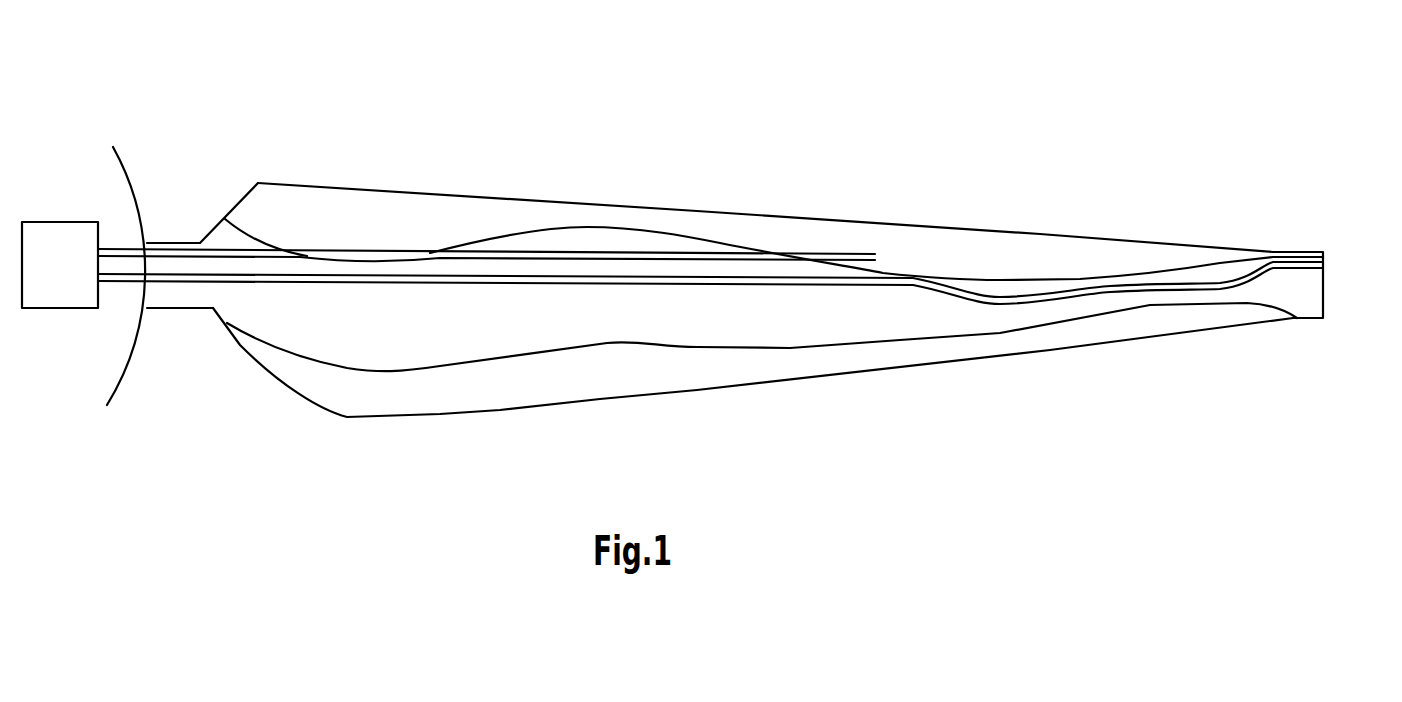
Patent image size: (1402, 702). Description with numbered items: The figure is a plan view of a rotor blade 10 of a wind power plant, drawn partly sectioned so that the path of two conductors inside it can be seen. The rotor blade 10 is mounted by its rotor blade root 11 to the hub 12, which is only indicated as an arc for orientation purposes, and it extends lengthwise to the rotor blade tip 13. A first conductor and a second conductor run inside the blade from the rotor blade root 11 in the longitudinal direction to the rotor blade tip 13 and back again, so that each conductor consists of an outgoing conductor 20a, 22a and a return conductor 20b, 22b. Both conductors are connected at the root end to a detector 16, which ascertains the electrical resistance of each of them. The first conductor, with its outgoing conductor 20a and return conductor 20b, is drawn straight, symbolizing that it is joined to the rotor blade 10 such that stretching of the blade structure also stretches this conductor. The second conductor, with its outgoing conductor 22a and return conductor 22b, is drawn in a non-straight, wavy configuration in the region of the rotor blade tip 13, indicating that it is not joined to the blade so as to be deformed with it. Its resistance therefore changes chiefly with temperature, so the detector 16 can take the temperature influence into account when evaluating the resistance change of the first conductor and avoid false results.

The rotor blade 10 is at (363, 181).
The rotor blade root 11 is at (173, 240).
The hub 12 is at (124, 163).
The rotor blade tip 13 is at (1327, 290).
The detector 16 is at (73, 283).
The outgoing conductor 20a is at (588, 253).
The return conductor 20b is at (672, 261).
The outgoing conductor 22a is at (797, 275).
The return conductor 22b is at (877, 280).